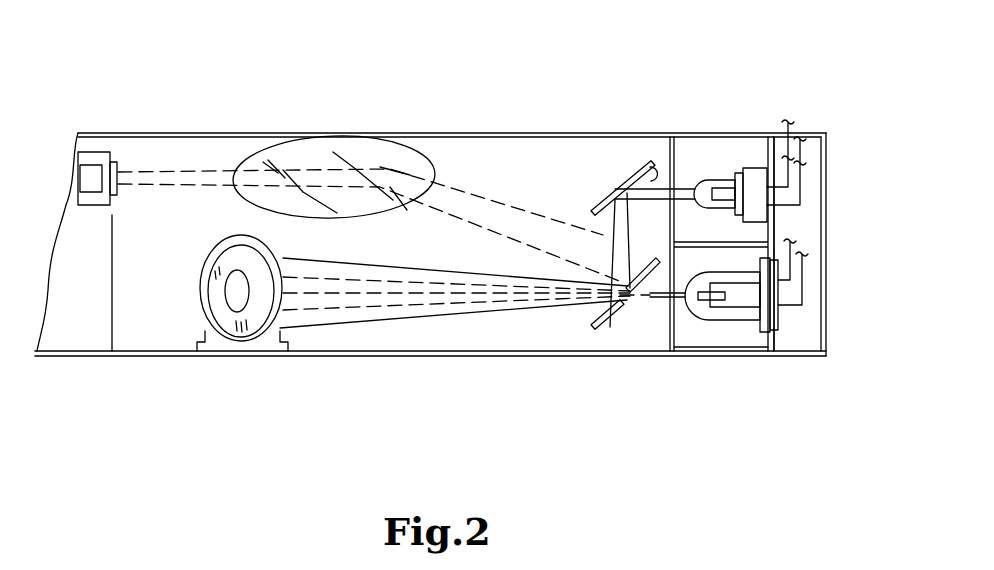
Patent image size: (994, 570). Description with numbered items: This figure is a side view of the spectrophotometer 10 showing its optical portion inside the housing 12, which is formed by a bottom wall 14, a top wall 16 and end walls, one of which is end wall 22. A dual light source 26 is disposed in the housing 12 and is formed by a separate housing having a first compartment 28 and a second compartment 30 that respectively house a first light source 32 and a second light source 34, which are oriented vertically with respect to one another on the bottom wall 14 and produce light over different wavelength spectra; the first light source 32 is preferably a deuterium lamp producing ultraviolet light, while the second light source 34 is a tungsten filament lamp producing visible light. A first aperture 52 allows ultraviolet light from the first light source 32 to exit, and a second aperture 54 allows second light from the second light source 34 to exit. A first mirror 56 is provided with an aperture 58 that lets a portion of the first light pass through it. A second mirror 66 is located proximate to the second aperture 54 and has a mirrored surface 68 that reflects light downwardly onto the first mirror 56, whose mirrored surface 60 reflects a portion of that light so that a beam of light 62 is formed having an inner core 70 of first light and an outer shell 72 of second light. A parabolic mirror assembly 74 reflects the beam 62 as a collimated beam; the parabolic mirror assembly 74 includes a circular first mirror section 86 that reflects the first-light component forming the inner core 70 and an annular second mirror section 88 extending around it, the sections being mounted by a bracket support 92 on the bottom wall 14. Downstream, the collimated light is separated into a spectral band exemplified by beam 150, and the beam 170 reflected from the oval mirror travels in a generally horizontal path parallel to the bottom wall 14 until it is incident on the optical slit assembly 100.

The spectrophotometer 10 is at (622, 68).
The housing 12 is at (195, 133).
The bottom wall 14 is at (142, 358).
The top wall 16 is at (273, 150).
The end wall 22 is at (826, 230).
The dual light source 26 is at (802, 218).
The first compartment 28 is at (700, 345).
The second compartment 30 is at (718, 150).
The first light source 32 is at (743, 320).
The second light source 34 is at (748, 170).
The first aperture 52 is at (655, 320).
The second aperture 54 is at (685, 172).
The first mirror 56 is at (612, 305).
The aperture 58 is at (630, 293).
The mirrored surface 60 is at (596, 326).
The beam of light 62 is at (338, 328).
The second mirror 66 is at (610, 195).
The mirrored surface 68 is at (658, 168).
The inner core 70 is at (403, 300).
The outer shell 72 is at (440, 312).
The parabolic mirror assembly 74 is at (180, 295).
The first mirror section 86 is at (230, 294).
The second mirror section 88 is at (238, 323).
The bracket support 92 is at (212, 267).
The optical slit assembly 100 is at (113, 199).
The beam 150 is at (462, 202).
The beam 170 is at (153, 170).